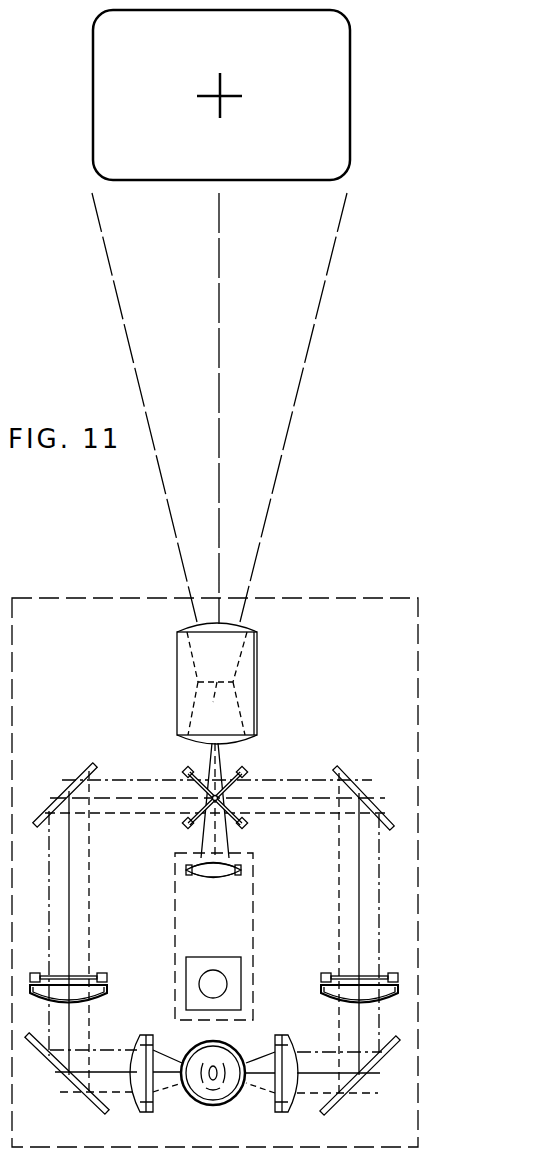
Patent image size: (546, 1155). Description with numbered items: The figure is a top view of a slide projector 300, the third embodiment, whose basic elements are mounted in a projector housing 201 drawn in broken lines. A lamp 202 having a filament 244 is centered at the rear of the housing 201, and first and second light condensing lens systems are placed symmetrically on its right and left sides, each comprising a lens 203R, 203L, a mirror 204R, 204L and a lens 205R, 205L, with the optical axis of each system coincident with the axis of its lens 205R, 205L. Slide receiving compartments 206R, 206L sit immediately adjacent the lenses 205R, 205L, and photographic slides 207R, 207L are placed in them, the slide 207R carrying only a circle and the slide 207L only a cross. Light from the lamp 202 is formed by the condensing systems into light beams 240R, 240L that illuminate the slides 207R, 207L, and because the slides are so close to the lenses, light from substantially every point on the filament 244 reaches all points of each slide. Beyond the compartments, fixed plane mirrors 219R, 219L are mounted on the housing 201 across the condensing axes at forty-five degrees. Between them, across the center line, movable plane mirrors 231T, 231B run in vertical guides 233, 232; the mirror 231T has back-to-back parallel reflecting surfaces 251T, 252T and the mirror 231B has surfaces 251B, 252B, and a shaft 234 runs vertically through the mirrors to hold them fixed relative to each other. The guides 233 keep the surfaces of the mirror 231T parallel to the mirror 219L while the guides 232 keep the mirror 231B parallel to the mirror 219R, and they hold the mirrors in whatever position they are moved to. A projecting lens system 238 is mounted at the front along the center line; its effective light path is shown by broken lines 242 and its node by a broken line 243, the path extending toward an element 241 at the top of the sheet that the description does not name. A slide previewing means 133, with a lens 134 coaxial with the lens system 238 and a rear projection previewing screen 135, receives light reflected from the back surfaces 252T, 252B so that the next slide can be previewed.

The target screen 241 is at (113, 79).
The slide projector 300 is at (138, 580).
The projector housing 201 is at (98, 598).
The projecting lens system 238 is at (266, 676).
The broken lines indicating effective light path 242 is at (190, 660).
The broken line indicating node 243 is at (216, 708).
The fixed mirror 219L is at (98, 768).
The fixed mirror 219R is at (332, 770).
The light beam 240L is at (69, 888).
The light beam 240R is at (359, 890).
The vertical guides 232 is at (185, 768).
The vertical guides 233 is at (190, 828).
The back reflecting surface 252B is at (186, 772).
The back reflecting surface 252T is at (242, 827).
The front reflecting surface 251B is at (215, 790).
The front reflecting surface 251T is at (212, 800).
The plane mirror 231B is at (247, 815).
The plane mirror 231T is at (195, 818).
The shaft 234 is at (235, 798).
The slide previewing means 133 is at (253, 915).
The lens 134 is at (223, 885).
The rear projection previewing screen 135 is at (222, 955).
The photographic slide 207L is at (88, 975).
The slide receiving compartment 206L is at (104, 973).
The lens 205L is at (108, 992).
The photographic slide 207R is at (350, 975).
The slide receiving compartment 206R is at (328, 973).
The lens 205R is at (323, 995).
The mirror 204L is at (66, 1078).
The mirror 204R is at (366, 1077).
The lens 203L is at (142, 1112).
The lens 203R is at (284, 1113).
The lamp 202 is at (236, 1048).
The filament 244 is at (201, 1100).